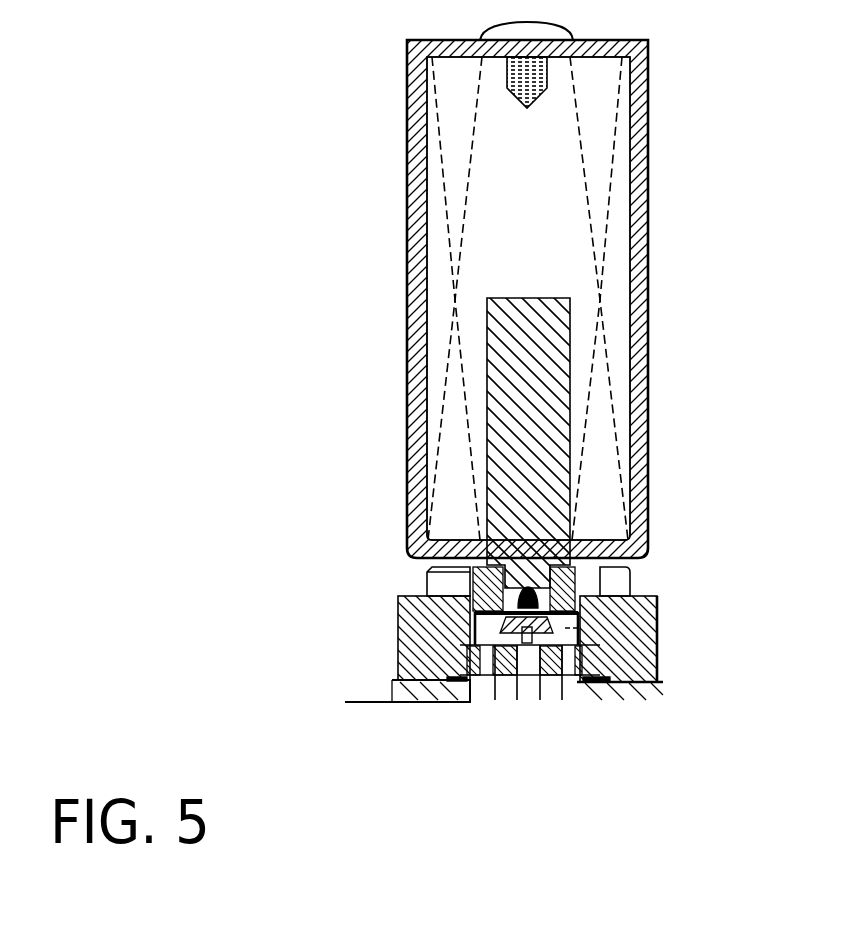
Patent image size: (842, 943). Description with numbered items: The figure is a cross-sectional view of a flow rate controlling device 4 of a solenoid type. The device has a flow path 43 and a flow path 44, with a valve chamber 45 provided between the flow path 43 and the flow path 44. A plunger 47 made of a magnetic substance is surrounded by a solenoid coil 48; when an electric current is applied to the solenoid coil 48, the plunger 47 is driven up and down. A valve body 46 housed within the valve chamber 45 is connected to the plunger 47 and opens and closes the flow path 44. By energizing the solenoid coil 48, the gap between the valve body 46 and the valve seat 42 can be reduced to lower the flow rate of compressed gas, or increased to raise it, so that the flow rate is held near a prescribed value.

The flow rate controlling device 4 is at (663, 182).
The valve seat 42 is at (640, 657).
The flow path 43 is at (397, 607).
The flow path 44 is at (525, 680).
The valve chamber 45 is at (578, 640).
The valve body 46 is at (657, 645).
The plunger 47 is at (558, 455).
The solenoid coil 48 is at (623, 292).